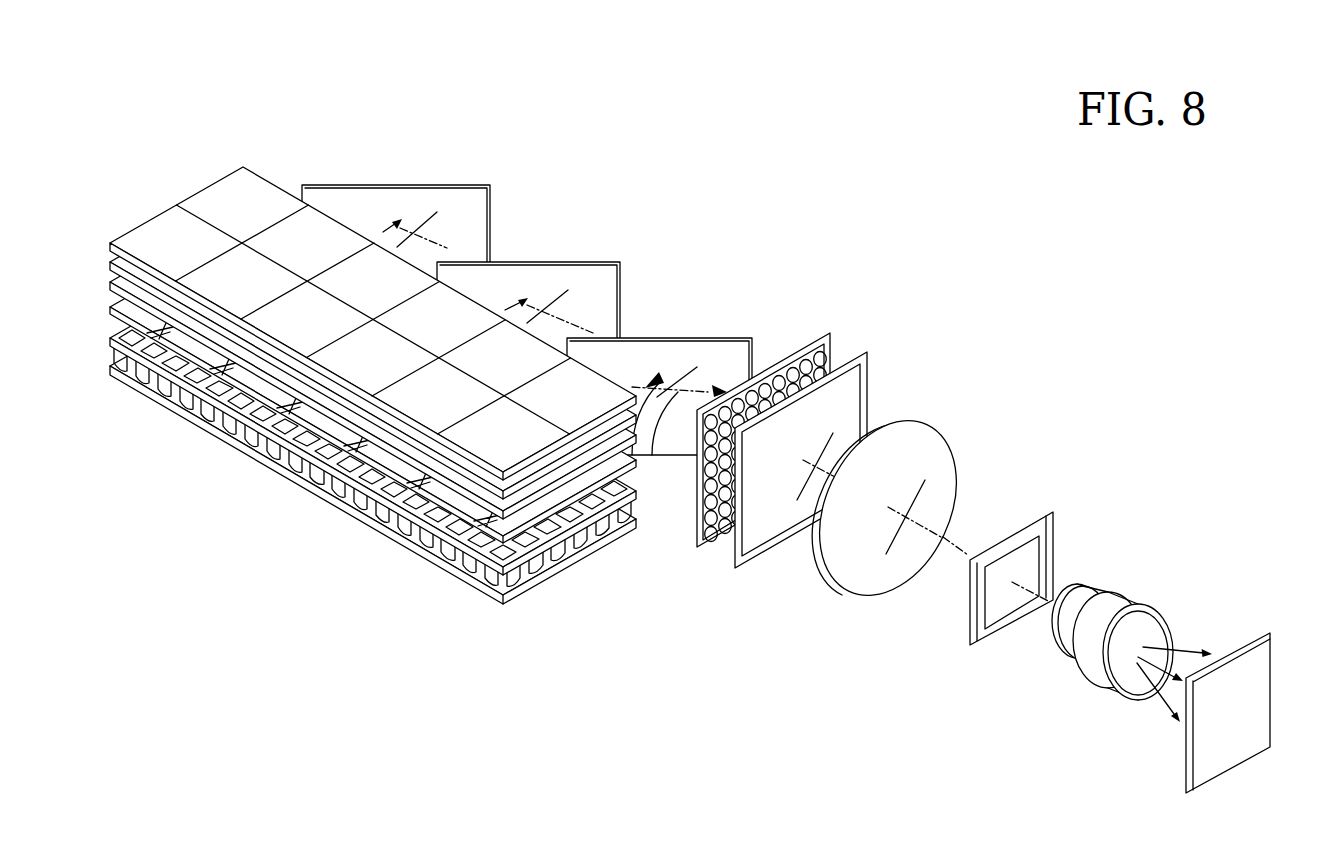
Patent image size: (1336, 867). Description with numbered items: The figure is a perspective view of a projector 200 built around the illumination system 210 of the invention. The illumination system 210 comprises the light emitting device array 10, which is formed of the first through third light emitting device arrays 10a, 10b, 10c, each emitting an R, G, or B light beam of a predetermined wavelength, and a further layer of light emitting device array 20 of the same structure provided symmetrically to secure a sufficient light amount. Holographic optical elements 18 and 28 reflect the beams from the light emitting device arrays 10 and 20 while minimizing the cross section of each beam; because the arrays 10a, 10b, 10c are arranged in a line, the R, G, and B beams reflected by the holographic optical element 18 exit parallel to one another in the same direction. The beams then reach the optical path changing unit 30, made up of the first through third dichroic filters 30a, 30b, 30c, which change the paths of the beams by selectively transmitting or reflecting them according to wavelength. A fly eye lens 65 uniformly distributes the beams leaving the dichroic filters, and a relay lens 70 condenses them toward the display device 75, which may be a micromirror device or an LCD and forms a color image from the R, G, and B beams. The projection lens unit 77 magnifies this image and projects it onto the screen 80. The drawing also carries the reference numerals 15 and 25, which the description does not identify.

The light emitting device array 10 is at (394, 317).
The first light emitting device array 10a is at (590, 333).
The second light emitting device array 10b is at (460, 258).
The third light emitting device array 10c is at (373, 297).
The light beam direction indicator 15 is at (641, 377).
The holographic optical element 18 is at (661, 395).
The light emitting device array 20 is at (594, 563).
The reflector frame plate 25 is at (630, 502).
The holographic optical element 28 is at (618, 476).
The optical path changing unit 30 is at (527, 296).
The first dichroic filter 30a is at (659, 373).
The second dichroic filter 30b is at (562, 262).
The third dichroic filter 30c is at (395, 187).
The fly eye lens 65 is at (867, 352).
The relay lens 70 is at (930, 432).
The display device 75 is at (1047, 518).
The projection lens unit 77 is at (1141, 600).
The screen 80 is at (1228, 690).
The projector 200 is at (958, 421).
The illumination system 210 is at (446, 316).